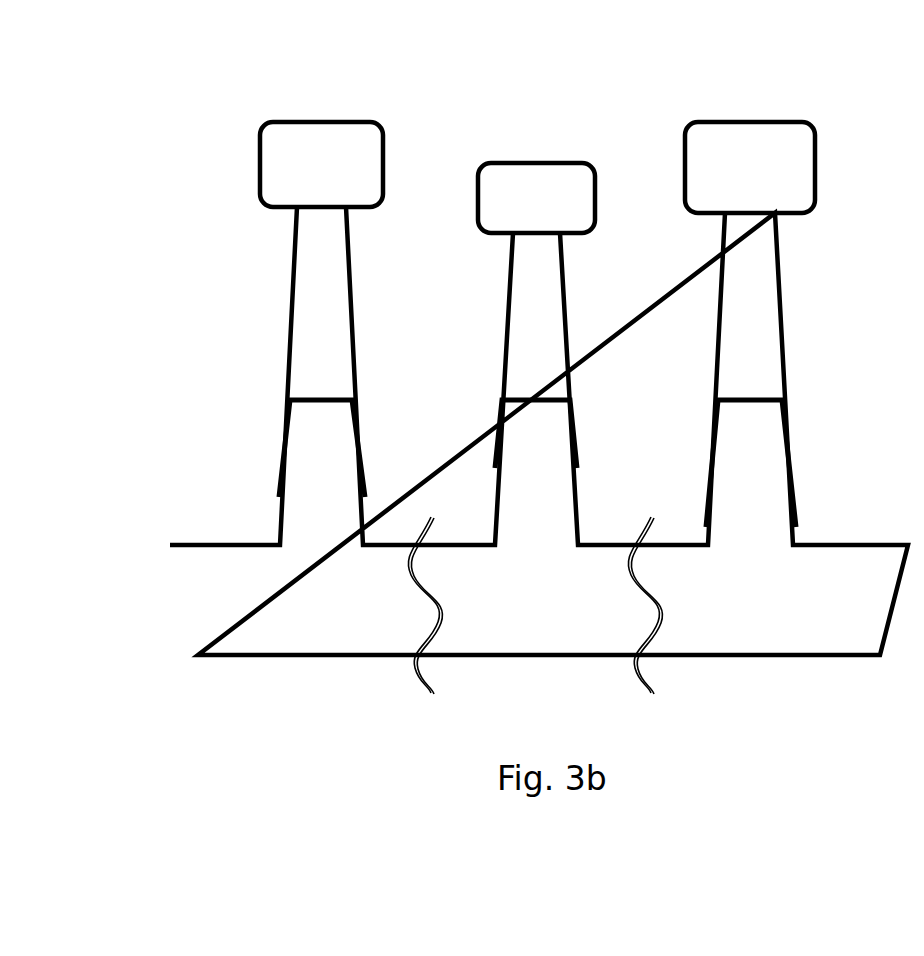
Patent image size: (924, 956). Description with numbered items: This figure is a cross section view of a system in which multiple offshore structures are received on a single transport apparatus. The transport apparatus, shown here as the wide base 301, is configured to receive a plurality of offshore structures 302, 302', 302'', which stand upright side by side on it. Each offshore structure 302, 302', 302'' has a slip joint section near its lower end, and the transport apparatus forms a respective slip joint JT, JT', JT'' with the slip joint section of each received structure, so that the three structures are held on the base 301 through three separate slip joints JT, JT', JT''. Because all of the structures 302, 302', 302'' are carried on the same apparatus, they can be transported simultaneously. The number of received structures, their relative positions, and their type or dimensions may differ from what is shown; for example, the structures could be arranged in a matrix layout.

The base / substrate 301 is at (208, 577).
The offshore structure 302 is at (321, 131).
The offshore structure 302' is at (536, 162).
The offshore structure 302'' is at (750, 133).
The slip joint JT is at (290, 439).
The slip joint JT' is at (504, 420).
The slip joint JT'' is at (719, 463).